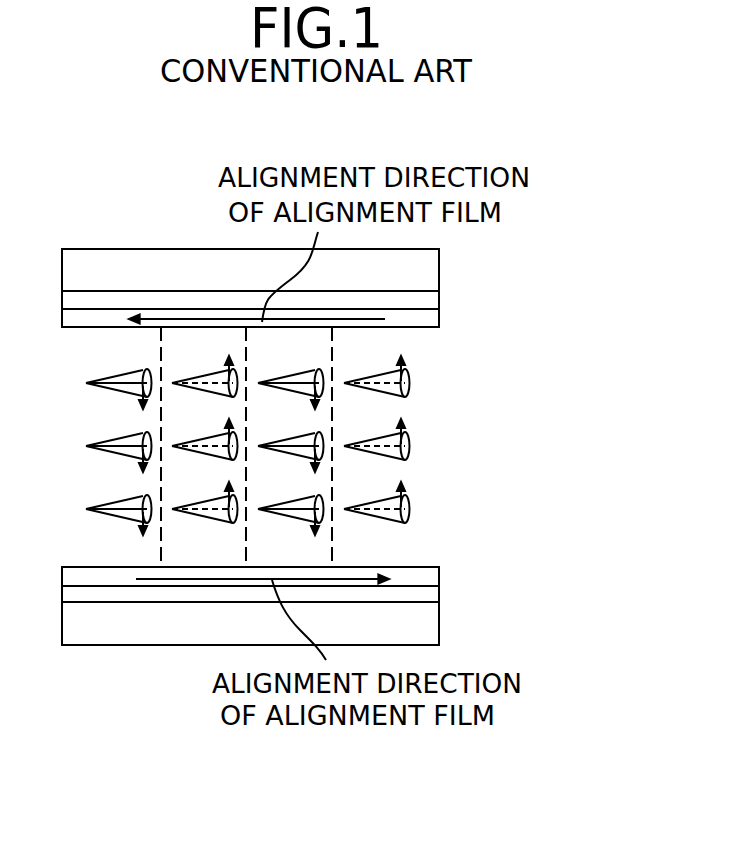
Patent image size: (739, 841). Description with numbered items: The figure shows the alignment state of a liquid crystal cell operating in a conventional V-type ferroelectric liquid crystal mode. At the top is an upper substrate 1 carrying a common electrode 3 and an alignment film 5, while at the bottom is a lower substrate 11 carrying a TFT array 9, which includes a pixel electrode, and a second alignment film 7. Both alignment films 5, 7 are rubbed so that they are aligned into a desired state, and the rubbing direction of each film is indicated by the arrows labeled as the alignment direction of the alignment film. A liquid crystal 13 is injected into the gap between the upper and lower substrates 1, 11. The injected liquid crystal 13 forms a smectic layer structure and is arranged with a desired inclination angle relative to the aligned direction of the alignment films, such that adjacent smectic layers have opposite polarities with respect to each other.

The upper substrate 1 is at (437, 262).
The common electrode 3 is at (437, 302).
The alignment film 5 is at (437, 325).
The alignment film 7 is at (437, 573).
The TFT array 9 is at (437, 597).
The lower substrate 11 is at (437, 629).
The liquid crystal 13 is at (103, 510).